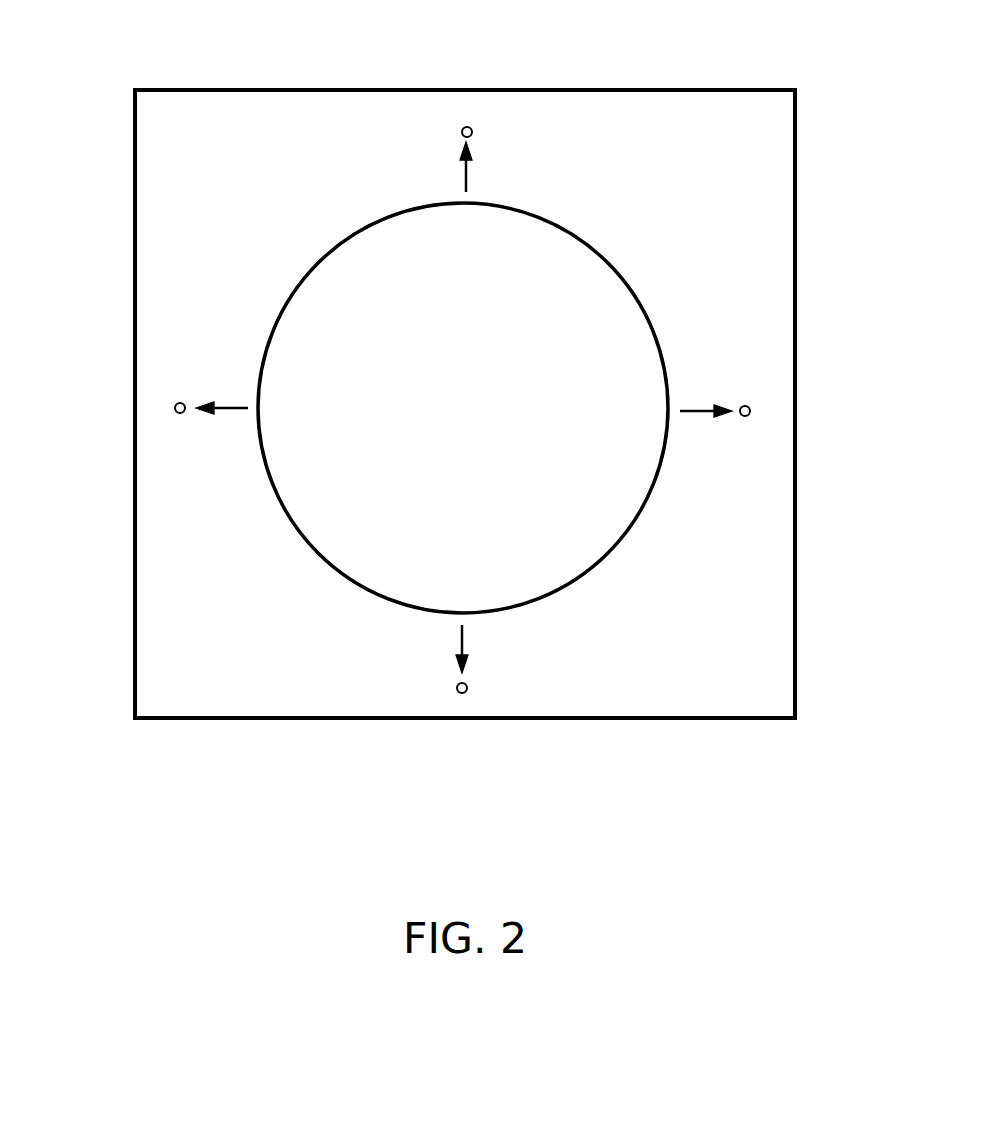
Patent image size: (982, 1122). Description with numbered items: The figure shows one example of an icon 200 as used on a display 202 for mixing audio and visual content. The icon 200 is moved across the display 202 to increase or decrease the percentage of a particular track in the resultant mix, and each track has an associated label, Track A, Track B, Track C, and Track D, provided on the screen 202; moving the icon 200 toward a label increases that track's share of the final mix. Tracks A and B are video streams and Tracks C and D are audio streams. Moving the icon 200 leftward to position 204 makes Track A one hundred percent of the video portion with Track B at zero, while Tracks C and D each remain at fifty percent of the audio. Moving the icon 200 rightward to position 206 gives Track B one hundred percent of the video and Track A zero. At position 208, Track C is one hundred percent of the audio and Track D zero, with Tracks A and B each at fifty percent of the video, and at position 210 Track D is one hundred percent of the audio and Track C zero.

The icon 200 is at (640, 300).
The display 202 is at (135, 206).
The position 204 is at (174, 408).
The position 206 is at (748, 417).
The position 208 is at (473, 131).
The position 210 is at (462, 694).